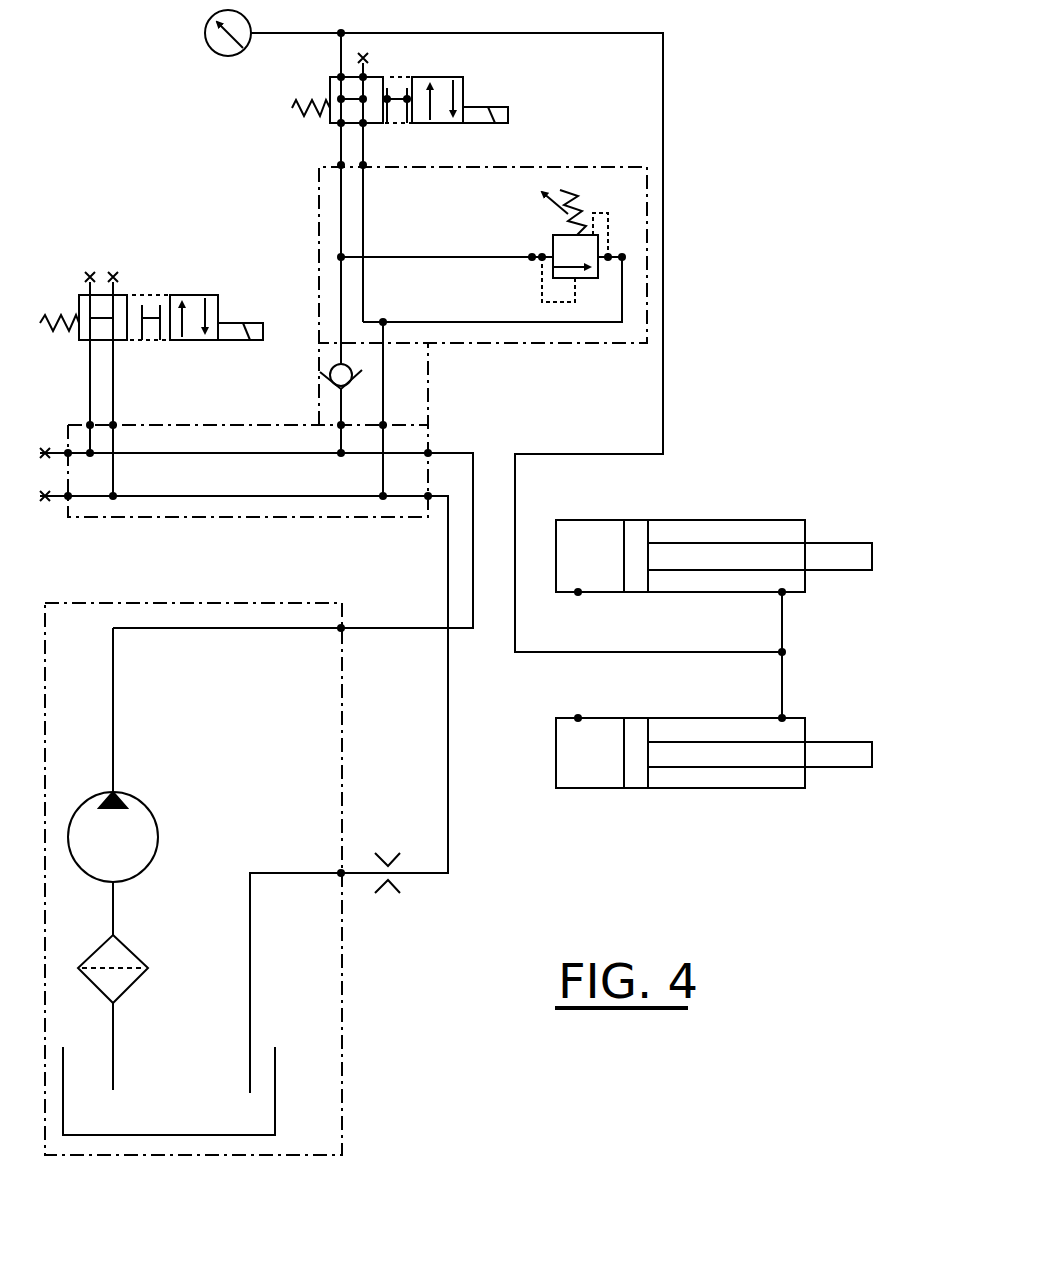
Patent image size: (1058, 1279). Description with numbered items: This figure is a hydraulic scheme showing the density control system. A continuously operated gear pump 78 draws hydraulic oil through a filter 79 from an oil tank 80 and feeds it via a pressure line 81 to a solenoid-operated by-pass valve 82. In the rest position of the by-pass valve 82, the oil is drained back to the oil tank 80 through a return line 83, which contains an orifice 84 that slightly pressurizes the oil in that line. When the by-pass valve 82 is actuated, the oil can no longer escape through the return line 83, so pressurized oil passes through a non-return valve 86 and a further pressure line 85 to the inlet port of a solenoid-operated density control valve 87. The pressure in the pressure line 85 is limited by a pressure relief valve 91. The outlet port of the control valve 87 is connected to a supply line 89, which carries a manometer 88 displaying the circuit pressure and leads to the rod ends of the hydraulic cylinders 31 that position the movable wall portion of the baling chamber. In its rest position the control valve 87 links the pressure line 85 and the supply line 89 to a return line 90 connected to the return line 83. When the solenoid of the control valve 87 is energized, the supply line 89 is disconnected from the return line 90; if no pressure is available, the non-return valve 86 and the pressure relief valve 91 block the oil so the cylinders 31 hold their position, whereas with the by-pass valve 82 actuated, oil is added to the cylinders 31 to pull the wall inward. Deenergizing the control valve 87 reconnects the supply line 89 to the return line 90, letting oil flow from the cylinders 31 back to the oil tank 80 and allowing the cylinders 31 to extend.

The hydraulic cylinders 31 is at (712, 594).
The gear pump 78 is at (158, 838).
The filter 79 is at (130, 990).
The oil tank 80 is at (275, 1082).
The pressure line 81 is at (400, 630).
The by-pass valve 82 is at (188, 295).
The return line 83 is at (450, 815).
The orifice 84 is at (392, 893).
The further pressure line 85 is at (341, 215).
The non-return valve 86 is at (325, 372).
The density control valve 87 is at (440, 123).
The manometer 88 is at (210, 47).
The supply line 89 is at (663, 356).
The return line 90 is at (363, 225).
The pressure relief valve 91 is at (553, 242).